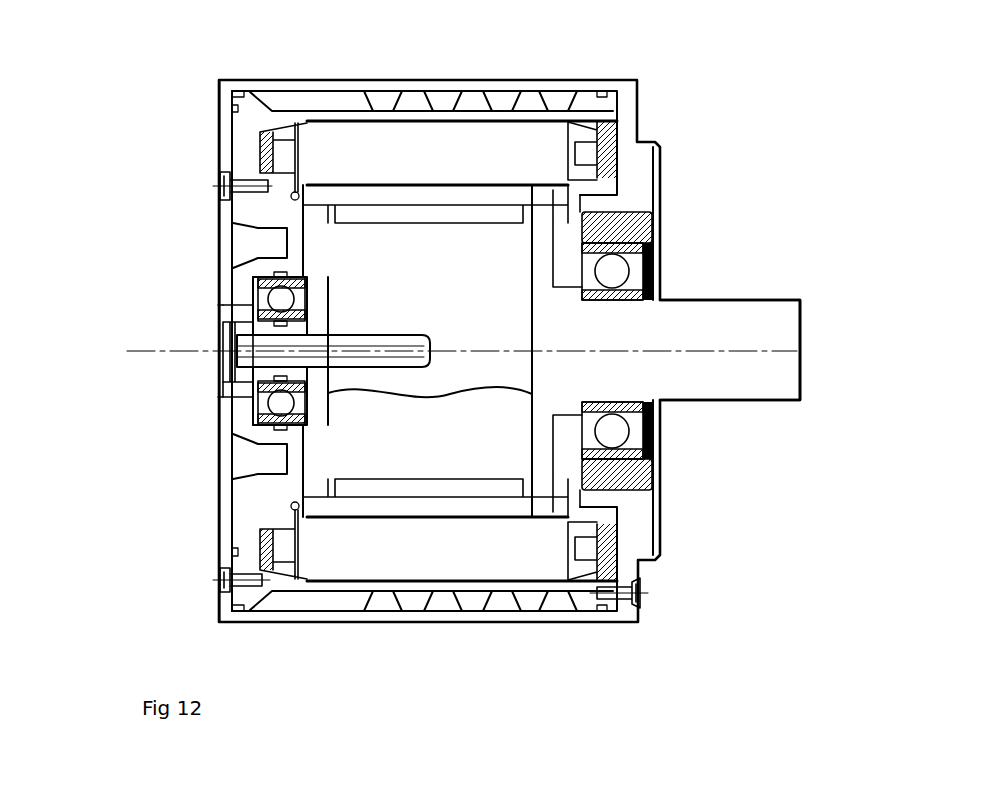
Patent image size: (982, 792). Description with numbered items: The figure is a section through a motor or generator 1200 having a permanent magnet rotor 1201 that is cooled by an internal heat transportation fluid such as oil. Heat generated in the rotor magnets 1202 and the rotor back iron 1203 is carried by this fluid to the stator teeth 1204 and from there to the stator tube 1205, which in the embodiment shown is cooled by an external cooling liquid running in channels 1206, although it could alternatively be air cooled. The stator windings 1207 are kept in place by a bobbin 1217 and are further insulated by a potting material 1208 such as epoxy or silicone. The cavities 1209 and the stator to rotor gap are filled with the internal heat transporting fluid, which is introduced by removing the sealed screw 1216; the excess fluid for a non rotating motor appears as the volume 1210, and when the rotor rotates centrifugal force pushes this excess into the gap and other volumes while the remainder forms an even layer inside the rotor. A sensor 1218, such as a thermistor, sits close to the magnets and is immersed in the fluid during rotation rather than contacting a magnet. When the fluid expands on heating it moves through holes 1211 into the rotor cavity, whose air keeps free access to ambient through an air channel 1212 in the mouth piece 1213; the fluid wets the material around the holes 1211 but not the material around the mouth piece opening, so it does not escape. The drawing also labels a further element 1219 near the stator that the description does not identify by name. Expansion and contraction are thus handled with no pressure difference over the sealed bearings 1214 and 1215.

The motor or generator 1200 is at (417, 183).
The permanent magnet rotor 1201 is at (797, 400).
The rotor magnets 1202 is at (533, 594).
The rotor back iron 1203 is at (662, 556).
The stator teeth 1204 is at (493, 615).
The stator tube 1205 is at (470, 603).
The channels 1206 is at (397, 603).
The stator windings 1207 is at (655, 578).
The potting material 1208 is at (267, 527).
The cavities 1209 is at (278, 200).
The volume of excess fluid 1210 is at (627, 398).
The holes 1211 is at (620, 165).
The air channel 1212 is at (210, 306).
The mouth piece 1213 is at (445, 335).
The sealed bearing 1214 is at (230, 403).
The sealed bearing 1215 is at (655, 418).
The sealed screw 1216 is at (218, 178).
The bobbin 1217 is at (295, 590).
The sensor 1218 is at (275, 105).
The stator tooth 1219 is at (484, 183).